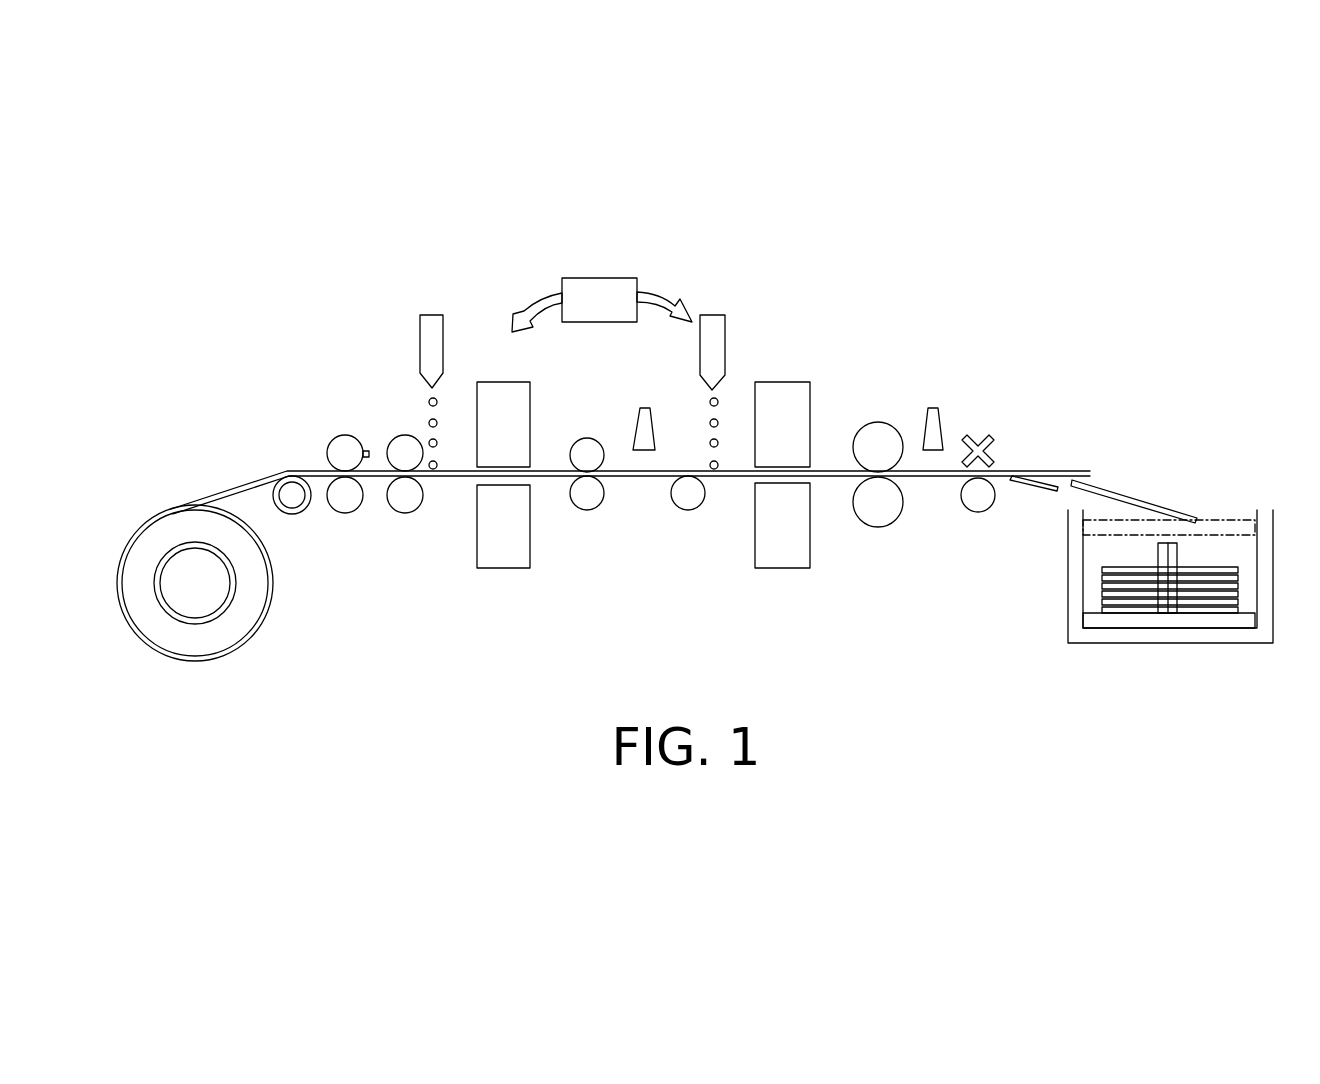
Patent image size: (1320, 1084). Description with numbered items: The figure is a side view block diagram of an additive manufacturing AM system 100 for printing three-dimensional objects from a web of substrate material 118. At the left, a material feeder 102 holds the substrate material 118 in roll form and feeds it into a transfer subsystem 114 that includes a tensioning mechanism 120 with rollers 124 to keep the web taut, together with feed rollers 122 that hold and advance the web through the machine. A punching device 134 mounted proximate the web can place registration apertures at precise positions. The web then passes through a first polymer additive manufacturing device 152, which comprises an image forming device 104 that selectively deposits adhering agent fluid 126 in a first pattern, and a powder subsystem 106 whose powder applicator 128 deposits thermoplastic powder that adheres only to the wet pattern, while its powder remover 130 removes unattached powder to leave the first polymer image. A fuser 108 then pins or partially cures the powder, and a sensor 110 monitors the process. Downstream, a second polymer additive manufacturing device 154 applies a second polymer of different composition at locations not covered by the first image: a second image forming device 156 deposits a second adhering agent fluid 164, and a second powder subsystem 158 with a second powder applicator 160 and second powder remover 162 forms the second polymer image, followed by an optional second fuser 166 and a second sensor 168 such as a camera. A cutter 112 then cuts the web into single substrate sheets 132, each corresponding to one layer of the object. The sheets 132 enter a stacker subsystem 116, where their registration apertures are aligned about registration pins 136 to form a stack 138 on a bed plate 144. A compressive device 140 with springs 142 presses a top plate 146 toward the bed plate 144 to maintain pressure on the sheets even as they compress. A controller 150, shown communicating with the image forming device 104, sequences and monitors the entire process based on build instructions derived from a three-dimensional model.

The AM system 100 is at (306, 268).
The material feeder 102 is at (205, 660).
The image forming device 104 is at (437, 310).
The powder subsystem 106 is at (544, 370).
The fuser 108 is at (585, 437).
The sensor 110 is at (645, 408).
The cutter 112 is at (985, 435).
The transfer subsystem 114 is at (305, 464).
The stacker subsystem 116 is at (1110, 654).
The substrate material 118 is at (255, 479).
The tensioning mechanism 120 is at (272, 464).
The feed rollers 122 is at (405, 435).
The rollers 124 is at (296, 515).
The adhering agent fluid 126 is at (436, 424).
The powder applicator 128 is at (503, 380).
The powder remover 130 is at (500, 570).
The substrate sheets 132 is at (1125, 493).
The punching device 134 is at (345, 435).
The registration pins 136 is at (1158, 562).
The stack 138 is at (1094, 582).
The compressive device 140 is at (1250, 488).
The springs 142 is at (1180, 510).
The bed plate 144 is at (1085, 618).
The top plate 146 is at (1217, 522).
The controller 150 is at (598, 277).
The first polymer additive manufacturing device 152 is at (416, 361).
The second polymer additive manufacturing device 154 is at (910, 340).
The second image forming device 156 is at (712, 313).
The second powder subsystem 158 is at (814, 366).
The second powder applicator 160 is at (783, 382).
The second powder remover 162 is at (778, 570).
The fluid 164 is at (718, 423).
The second fuser 166 is at (878, 422).
The second sensor 168 is at (933, 408).